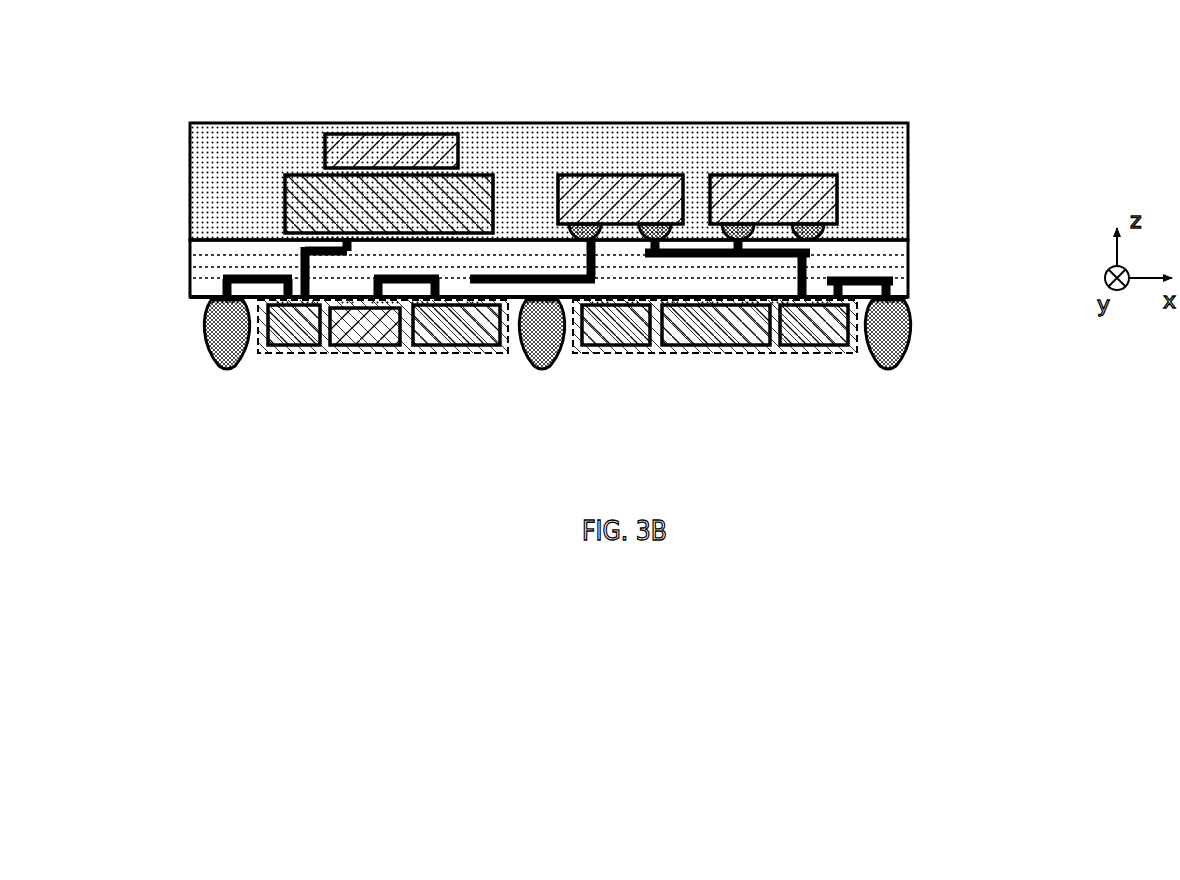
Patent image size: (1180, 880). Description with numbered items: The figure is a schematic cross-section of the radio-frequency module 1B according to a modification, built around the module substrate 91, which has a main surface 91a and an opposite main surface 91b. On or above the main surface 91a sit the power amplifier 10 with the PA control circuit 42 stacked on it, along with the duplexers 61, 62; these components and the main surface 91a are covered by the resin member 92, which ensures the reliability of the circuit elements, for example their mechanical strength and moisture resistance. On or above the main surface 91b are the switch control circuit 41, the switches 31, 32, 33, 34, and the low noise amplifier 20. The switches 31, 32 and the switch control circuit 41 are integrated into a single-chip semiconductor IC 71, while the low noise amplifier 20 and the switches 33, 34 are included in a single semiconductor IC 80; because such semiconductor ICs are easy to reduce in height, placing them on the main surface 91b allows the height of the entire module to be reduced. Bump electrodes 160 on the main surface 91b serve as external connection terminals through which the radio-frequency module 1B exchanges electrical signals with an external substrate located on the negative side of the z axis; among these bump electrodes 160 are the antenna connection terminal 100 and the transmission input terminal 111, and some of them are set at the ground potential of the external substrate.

The radio-frequency module 1B is at (960, 124).
The power amplifier 10 is at (467, 192).
The low noise amplifier 20 is at (720, 330).
The switch 31 is at (297, 330).
The switch 32 is at (465, 330).
The switch 33 is at (815, 330).
The switch 34 is at (612, 330).
The switch control circuit 41 is at (368, 330).
The PA control circuit 42 is at (383, 138).
The duplexer 61 is at (618, 175).
The duplexer 62 is at (778, 175).
The semiconductor IC 71 is at (405, 353).
The semiconductor IC 80 is at (655, 353).
The module substrate 91 is at (907, 260).
The main surface 91a is at (890, 237).
The main surface 91b is at (906, 300).
The resin member 92 is at (908, 190).
The antenna connection terminal 100 is at (890, 358).
The transmission input terminal 111 is at (233, 360).
The bump electrodes 160 is at (540, 358).